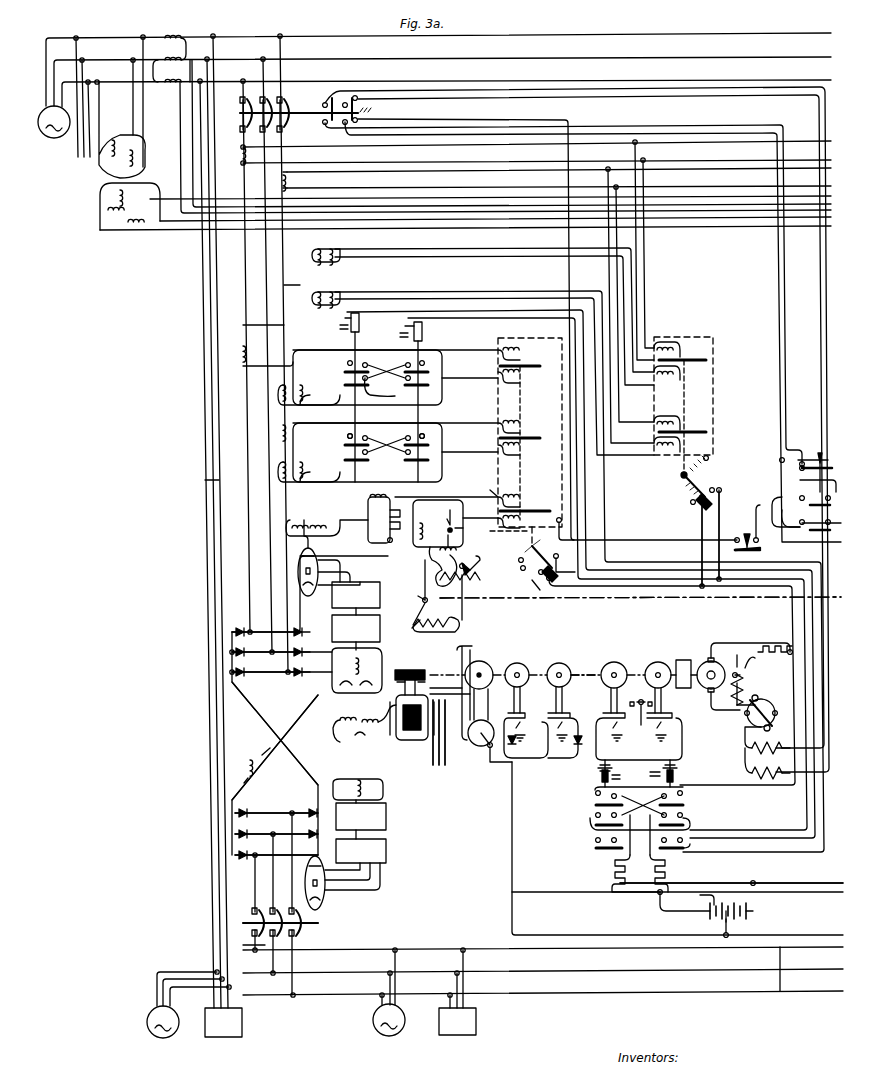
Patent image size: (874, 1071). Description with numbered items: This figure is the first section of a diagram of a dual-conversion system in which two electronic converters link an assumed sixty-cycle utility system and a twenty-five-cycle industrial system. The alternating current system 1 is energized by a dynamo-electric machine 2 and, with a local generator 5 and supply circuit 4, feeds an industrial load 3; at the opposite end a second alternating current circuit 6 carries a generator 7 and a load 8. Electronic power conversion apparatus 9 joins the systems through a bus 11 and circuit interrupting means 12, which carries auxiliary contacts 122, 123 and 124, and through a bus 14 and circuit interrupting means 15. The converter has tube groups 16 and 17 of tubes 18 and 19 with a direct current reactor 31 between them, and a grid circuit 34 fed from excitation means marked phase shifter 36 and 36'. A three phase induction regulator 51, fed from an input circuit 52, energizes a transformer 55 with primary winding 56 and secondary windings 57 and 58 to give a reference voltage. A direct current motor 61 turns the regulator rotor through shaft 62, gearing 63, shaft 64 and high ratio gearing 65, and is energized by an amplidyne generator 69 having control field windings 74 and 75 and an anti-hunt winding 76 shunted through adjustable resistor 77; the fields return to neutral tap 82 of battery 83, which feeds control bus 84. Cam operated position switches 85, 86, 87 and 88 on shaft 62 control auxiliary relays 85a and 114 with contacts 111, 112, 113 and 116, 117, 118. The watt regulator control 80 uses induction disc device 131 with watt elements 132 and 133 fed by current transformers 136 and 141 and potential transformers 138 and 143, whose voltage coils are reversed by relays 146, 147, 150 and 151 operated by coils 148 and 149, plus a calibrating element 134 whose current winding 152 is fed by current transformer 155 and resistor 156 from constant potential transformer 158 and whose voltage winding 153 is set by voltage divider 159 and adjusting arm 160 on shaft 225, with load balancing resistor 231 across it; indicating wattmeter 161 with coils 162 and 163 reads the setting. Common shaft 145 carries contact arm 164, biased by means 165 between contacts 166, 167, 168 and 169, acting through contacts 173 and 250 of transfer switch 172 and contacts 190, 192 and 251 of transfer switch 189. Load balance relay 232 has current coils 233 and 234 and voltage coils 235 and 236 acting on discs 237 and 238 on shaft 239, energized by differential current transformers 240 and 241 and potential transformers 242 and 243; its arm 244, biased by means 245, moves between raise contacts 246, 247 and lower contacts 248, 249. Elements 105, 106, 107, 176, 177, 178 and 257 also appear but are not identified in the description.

The alternating current system 1 is at (92, 159).
The dynamo-electric machine 2 is at (50, 138).
The industrial load 3 is at (222, 1037).
The supply circuit 4 is at (212, 484).
The local 60 cycle generator 5 is at (160, 1038).
The second alternating current circuit 6 is at (782, 985).
The dynamo-electric generator 7 is at (386, 1036).
The industrial load 8 is at (456, 1035).
The electronic power conversion apparatus 9 is at (250, 742).
The bus 11 is at (265, 322).
The circuit interrupting means 12 is at (247, 113).
The bus 14 is at (254, 948).
The circuit interrupting means 15 is at (258, 920).
The converter tube group 16 is at (264, 650).
The converter tube group 17 is at (272, 832).
The tube 18 is at (318, 552).
The tube 19 is at (315, 856).
The direct current reactor 31 is at (258, 776).
The grid circuit 34 is at (420, 686).
The phase shifter 36 is at (369, 617).
The phase shifter 36' is at (375, 833).
The three phase induction regulator 51 is at (412, 740).
The input circuit 52 is at (440, 760).
The transformer 55 is at (358, 733).
The primary winding 56 is at (340, 723).
The secondary winding 57 is at (360, 672).
The secondary winding 58 is at (350, 788).
The direct current motor 61 is at (705, 662).
The shaft 62 is at (582, 672).
The gearing 63 is at (410, 670).
The shaft 64 is at (395, 686).
The high ratio gearing 65 is at (684, 688).
The reversible polarity direct current generator 69 is at (750, 718).
The control field winding 74 is at (780, 745).
The control field winding 75 is at (780, 770).
The anti-hunt field winding 76 is at (752, 682).
The adjustable resistor 77 is at (758, 650).
The watt regulator control 80 is at (510, 600).
The neutral tap 82 is at (720, 926).
The battery 83 is at (746, 915).
The control bus 84 is at (796, 866).
The cam operated position switch 85 is at (664, 658).
The auxiliary relay 85a is at (700, 770).
The cam operated position switch 86 is at (620, 658).
The limit switch 87 is at (565, 658).
The limit switch 88 is at (524, 658).
The synchroscope 105 is at (490, 658).
The meter 106 is at (490, 722).
The contact 107 is at (490, 750).
The contact 111 is at (683, 796).
The contact 112 is at (683, 815).
The contact 113 is at (683, 844).
The auxiliary relay 114 is at (632, 770).
The contact 116 is at (596, 793).
The contact 117 is at (596, 815).
The contact 118 is at (596, 840).
The auxiliary circuit controlling contacts 122 is at (328, 126).
The auxiliary circuit controlling contacts 123 is at (360, 102).
The auxiliary circuit controlling contacts 124 is at (325, 103).
The induction disc type device 131 is at (550, 331).
The watt responsive element 132 is at (520, 352).
The watt responsive element 133 is at (516, 412).
The calibrating element 134 is at (515, 488).
The current transformer 136 is at (242, 365).
The potential transformer 138 is at (305, 392).
The current transformer 141 is at (290, 432).
The potential transformer 143 is at (305, 468).
The common shaft 145 is at (528, 544).
The auxiliary reversing relay 146 is at (360, 322).
The auxiliary reversing relay 147 is at (423, 330).
The operating coil 148 is at (351, 318).
The operating coil 149 is at (414, 325).
The auxiliary reversing relay 150 is at (345, 432).
The auxiliary reversing relay 151 is at (428, 436).
The current winding 152 is at (484, 485).
The voltage winding 153 is at (500, 518).
The current transformer 155 is at (365, 495).
The resistor 156 is at (392, 542).
The constant potential transformer 158 is at (303, 518).
The adjustable resistor 159 is at (410, 612).
The adjusting arm 160 is at (417, 589).
The indicating wattmeter 161 is at (468, 524).
The current coil 162 is at (430, 500).
The voltage coil 163 is at (428, 552).
The movable contact arm 164 is at (521, 560).
The biasing means 165 is at (523, 568).
The contact 166 is at (531, 591).
The contact 167 is at (541, 572).
The contact 168 is at (549, 578).
The contact 169 is at (559, 520).
The watt regulator transfer switch 172 is at (764, 514).
The contacts 173 is at (737, 540).
The current transformer 176 is at (166, 36).
The leads 177 is at (198, 45).
The transformer 178 is at (112, 185).
The demand load regulator transfer switch 189 is at (808, 448).
The contacts 190 is at (798, 468).
The contact 192 is at (782, 460).
The shaft 225 is at (668, 598).
The adjustable resistor 231 is at (452, 588).
The load balance relay 232 is at (693, 327).
The current coil 233 is at (658, 352).
The current coil 234 is at (655, 430).
The voltage coil 235 is at (655, 380).
The voltage coil 236 is at (660, 454).
The induction disc 237 is at (688, 357).
The induction disc 238 is at (686, 430).
The common shaft 239 is at (682, 470).
The current transformer 240 is at (240, 149).
The current transformer 241 is at (290, 182).
The potential transformer 242 is at (332, 242).
The potential transformer 243 is at (332, 283).
The movable contact arm 244 is at (680, 476).
The biasing means 245 is at (684, 490).
The raise contact 246 is at (690, 500).
The raise contact 247 is at (700, 504).
The lower contact 248 is at (708, 462).
The lower contact 249 is at (721, 488).
The contacts 250 is at (748, 552).
The contacts 251 is at (802, 498).
The contact 257 is at (800, 524).